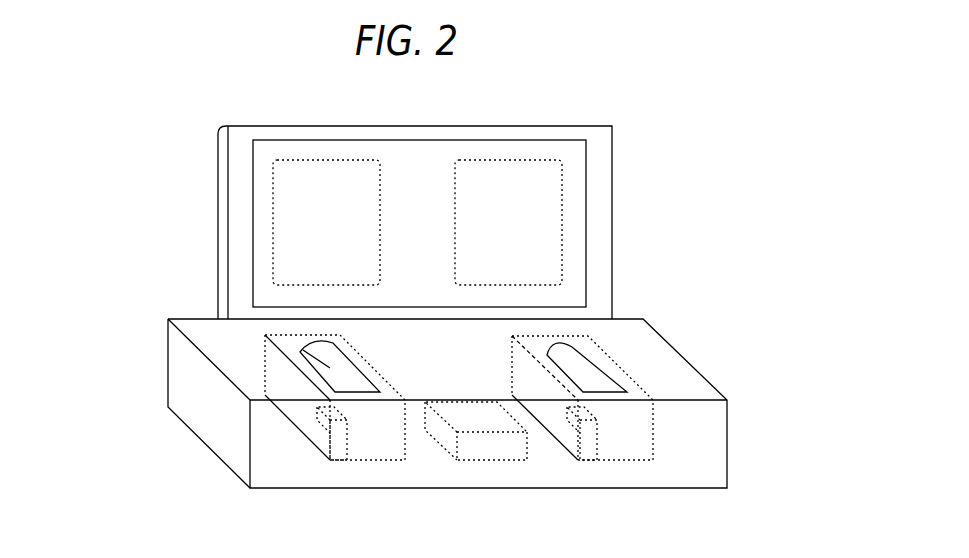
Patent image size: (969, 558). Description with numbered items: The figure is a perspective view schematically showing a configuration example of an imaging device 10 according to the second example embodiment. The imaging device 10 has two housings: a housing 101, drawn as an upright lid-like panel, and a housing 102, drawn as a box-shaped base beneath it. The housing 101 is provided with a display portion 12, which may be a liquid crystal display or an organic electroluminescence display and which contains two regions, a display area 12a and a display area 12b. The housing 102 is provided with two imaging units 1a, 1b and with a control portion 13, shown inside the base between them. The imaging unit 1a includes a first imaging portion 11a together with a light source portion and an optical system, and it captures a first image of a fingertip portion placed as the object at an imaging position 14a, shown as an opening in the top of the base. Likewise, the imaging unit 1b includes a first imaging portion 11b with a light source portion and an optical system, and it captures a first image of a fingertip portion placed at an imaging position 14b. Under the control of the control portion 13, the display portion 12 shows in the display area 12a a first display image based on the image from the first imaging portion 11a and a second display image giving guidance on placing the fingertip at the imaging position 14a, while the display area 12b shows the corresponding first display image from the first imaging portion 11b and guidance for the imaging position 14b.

The imaging device 10 is at (733, 243).
The housing 101 is at (218, 152).
The housing 102 is at (207, 418).
The display portion 12 is at (578, 151).
The display area 12a is at (300, 210).
The display area 12b is at (537, 208).
The imaging unit 1a is at (280, 375).
The imaging unit 1b is at (632, 428).
The imaging position 14a is at (275, 340).
The imaging position 14b is at (587, 370).
The first imaging portion 11a is at (343, 462).
The first imaging portion 11b is at (591, 462).
The control portion 13 is at (488, 447).